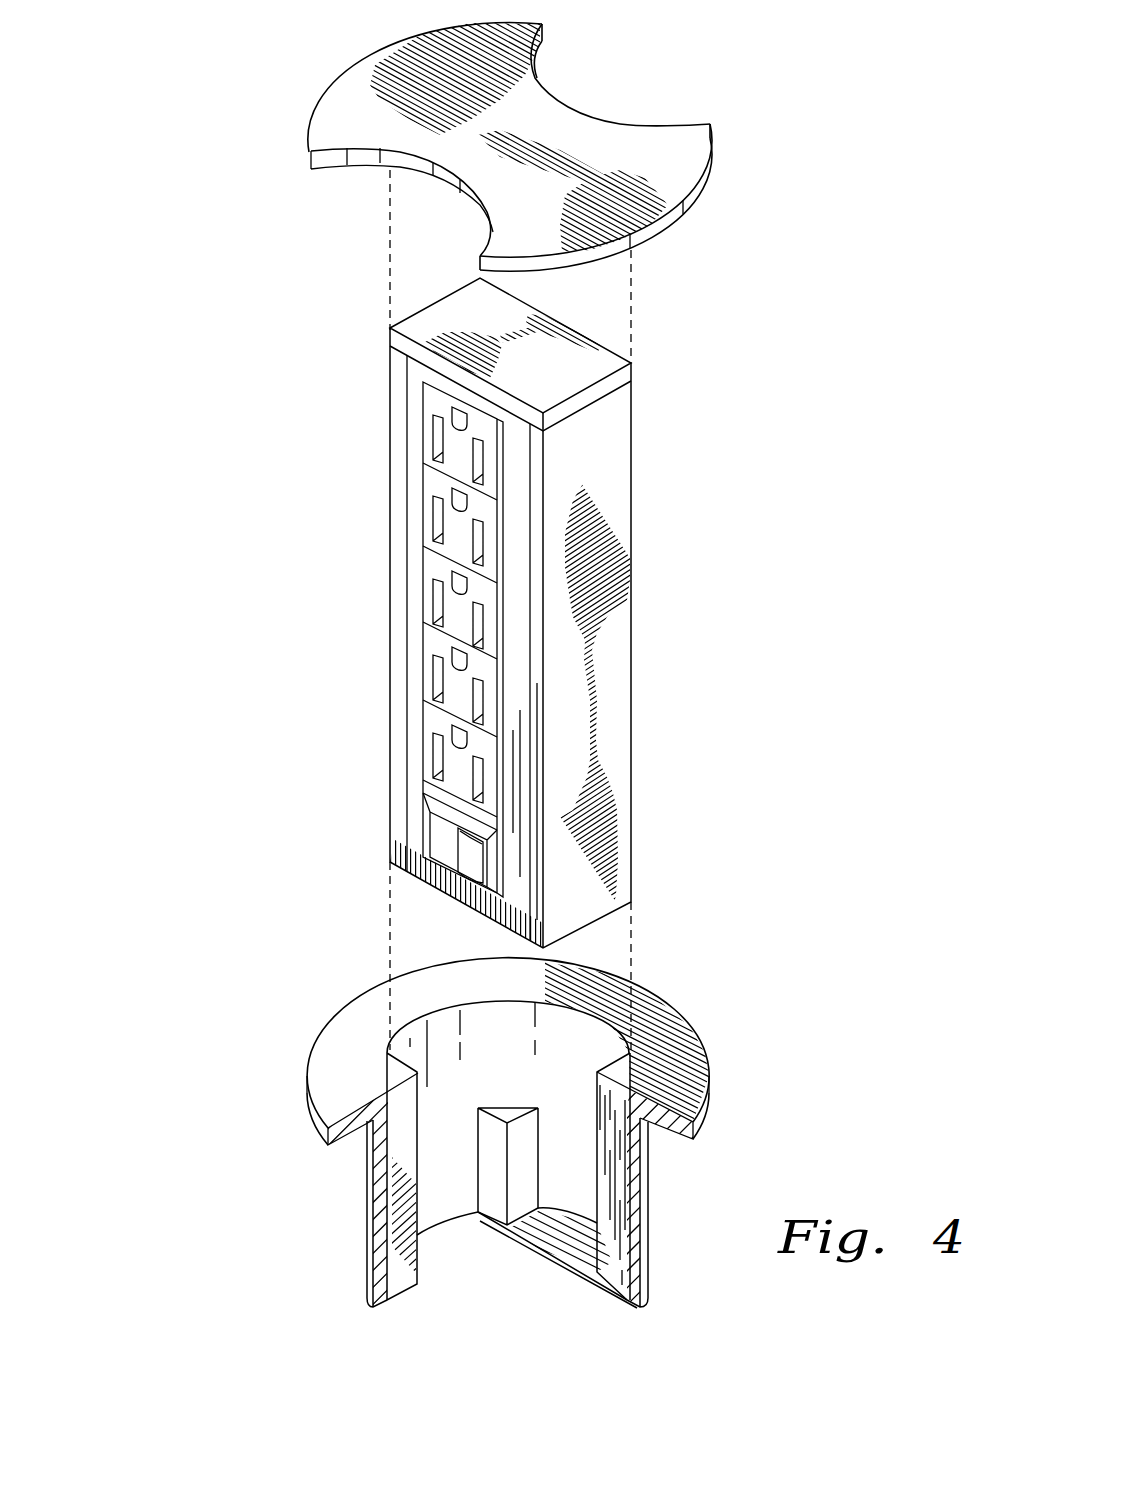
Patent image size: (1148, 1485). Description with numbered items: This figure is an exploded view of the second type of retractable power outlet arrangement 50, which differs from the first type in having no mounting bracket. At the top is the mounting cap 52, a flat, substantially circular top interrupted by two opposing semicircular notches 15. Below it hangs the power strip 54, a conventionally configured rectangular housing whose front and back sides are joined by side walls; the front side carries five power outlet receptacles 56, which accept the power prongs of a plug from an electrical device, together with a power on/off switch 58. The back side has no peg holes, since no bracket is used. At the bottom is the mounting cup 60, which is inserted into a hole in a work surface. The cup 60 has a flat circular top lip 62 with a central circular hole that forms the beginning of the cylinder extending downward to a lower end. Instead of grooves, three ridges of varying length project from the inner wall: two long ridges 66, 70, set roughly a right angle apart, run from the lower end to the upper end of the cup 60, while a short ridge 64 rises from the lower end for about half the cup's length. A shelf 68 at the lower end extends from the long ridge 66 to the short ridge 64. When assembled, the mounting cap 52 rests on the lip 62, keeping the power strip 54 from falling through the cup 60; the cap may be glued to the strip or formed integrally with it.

The retractable power outlet arrangement 50 is at (200, 262).
The mounting cap 52 is at (523, 90).
The semicircular notches 15 is at (460, 178).
The power strip 54 is at (388, 427).
The power outlet receptacles 56 is at (430, 560).
The power on/off switch 58 is at (440, 832).
The mounting cup 60 is at (370, 1203).
The circular top lip 62 is at (343, 1028).
The short ridge 64 is at (505, 1113).
The long ridge 66 is at (610, 1170).
The shelf 68 is at (557, 1243).
The long ridge 70 is at (410, 1108).